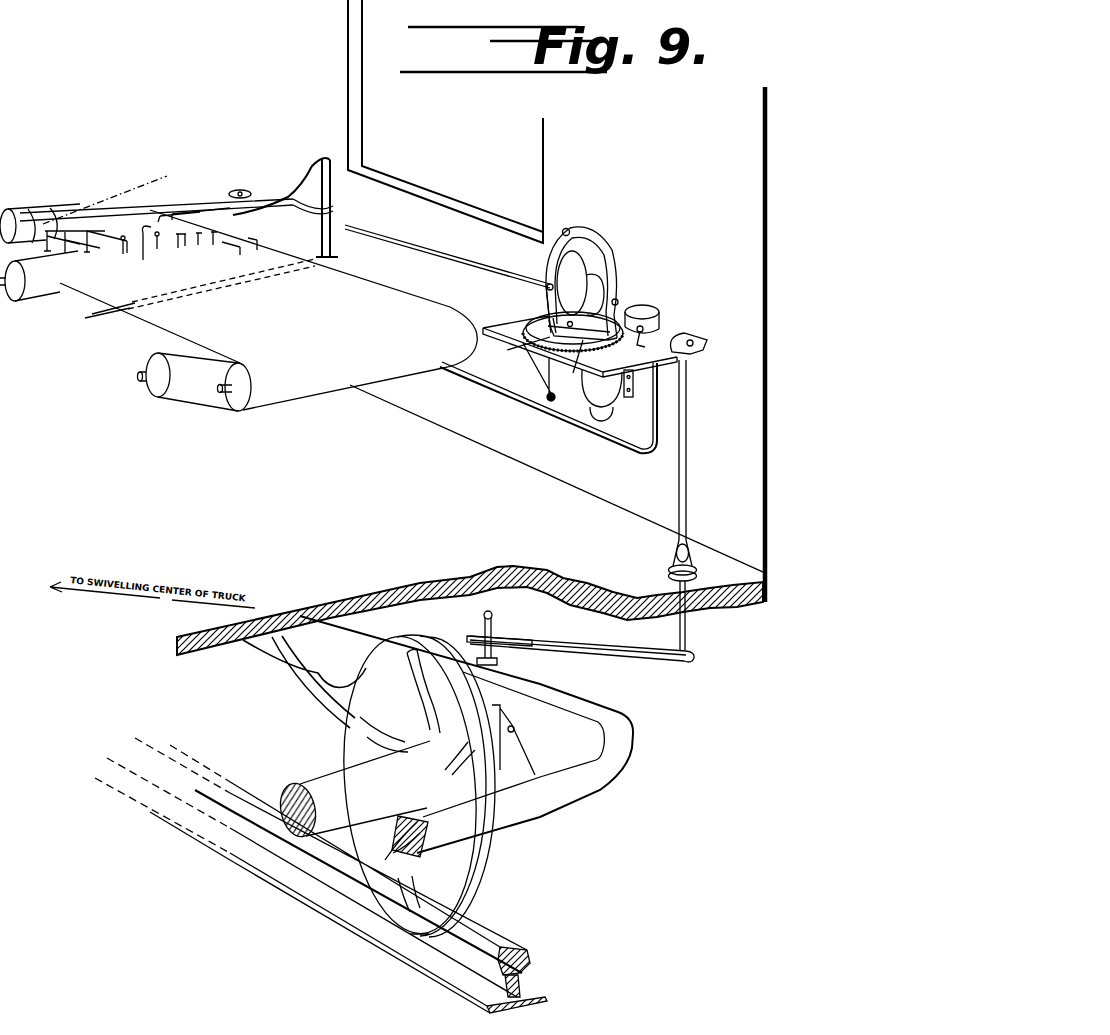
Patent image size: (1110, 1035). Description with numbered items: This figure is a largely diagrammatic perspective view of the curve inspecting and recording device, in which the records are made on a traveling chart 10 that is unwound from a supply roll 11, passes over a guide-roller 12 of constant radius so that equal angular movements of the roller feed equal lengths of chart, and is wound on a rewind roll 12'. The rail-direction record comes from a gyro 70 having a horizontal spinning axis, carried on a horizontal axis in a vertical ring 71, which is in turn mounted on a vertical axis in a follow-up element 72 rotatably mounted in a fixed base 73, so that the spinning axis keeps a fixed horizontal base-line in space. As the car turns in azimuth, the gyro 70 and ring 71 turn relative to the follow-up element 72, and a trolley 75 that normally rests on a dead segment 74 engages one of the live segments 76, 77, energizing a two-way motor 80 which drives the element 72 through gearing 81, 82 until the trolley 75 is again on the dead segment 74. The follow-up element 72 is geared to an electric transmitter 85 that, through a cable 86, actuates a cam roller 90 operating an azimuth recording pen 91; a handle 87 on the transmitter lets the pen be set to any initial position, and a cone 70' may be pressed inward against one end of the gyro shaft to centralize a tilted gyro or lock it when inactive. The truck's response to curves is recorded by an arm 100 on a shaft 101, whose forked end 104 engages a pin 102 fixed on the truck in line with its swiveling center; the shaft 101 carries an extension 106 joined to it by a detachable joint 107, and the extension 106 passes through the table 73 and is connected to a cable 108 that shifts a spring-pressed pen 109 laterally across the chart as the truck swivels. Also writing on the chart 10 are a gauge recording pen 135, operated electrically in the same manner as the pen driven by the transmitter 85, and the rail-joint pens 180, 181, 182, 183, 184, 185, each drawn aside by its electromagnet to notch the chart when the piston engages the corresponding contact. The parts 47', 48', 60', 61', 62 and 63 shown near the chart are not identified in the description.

The traveling chart 10 is at (268, 310).
The supply roll 11 is at (42, 288).
The guide-roller 12 is at (241, 407).
The rewind roll 12' is at (188, 397).
The guide rod 47' is at (112, 327).
The bracket 48' is at (288, 184).
The link 60' is at (336, 199).
The rod 61' is at (156, 221).
The arm 62 is at (143, 260).
The arm 63 is at (163, 247).
The gyro 70 is at (605, 276).
The centralizing cone 70' is at (638, 280).
The vertical ring 71 is at (550, 257).
The follow-up element 72 is at (587, 235).
The fixed base 73 is at (675, 333).
The dead segment 74 is at (548, 385).
The trolley 75 is at (550, 332).
The live segment 76 is at (537, 338).
The live segment 77 is at (562, 339).
The two-way motor 80 is at (602, 395).
The gearing 81 is at (598, 347).
The gearing 82 is at (582, 360).
The electric transmitter 85 is at (642, 306).
The cable 86 is at (613, 448).
The handle 87 is at (635, 347).
The cam roller 90 is at (40, 208).
The recording pen 91 is at (84, 258).
The arm 100 is at (602, 651).
The shaft 101 is at (688, 633).
The pin 102 is at (497, 616).
The forked end 104 is at (482, 629).
The shaft extension 106 is at (688, 463).
The detachable joint 107 is at (668, 560).
The cable 108 is at (434, 253).
The pen 109 is at (101, 254).
The recording pen 135 is at (98, 232).
The pen 180 is at (182, 213).
The pen 181 is at (320, 261).
The pen 182 is at (165, 215).
The pen 183 is at (212, 248).
The pen 184 is at (147, 224).
The pen 185 is at (220, 253).